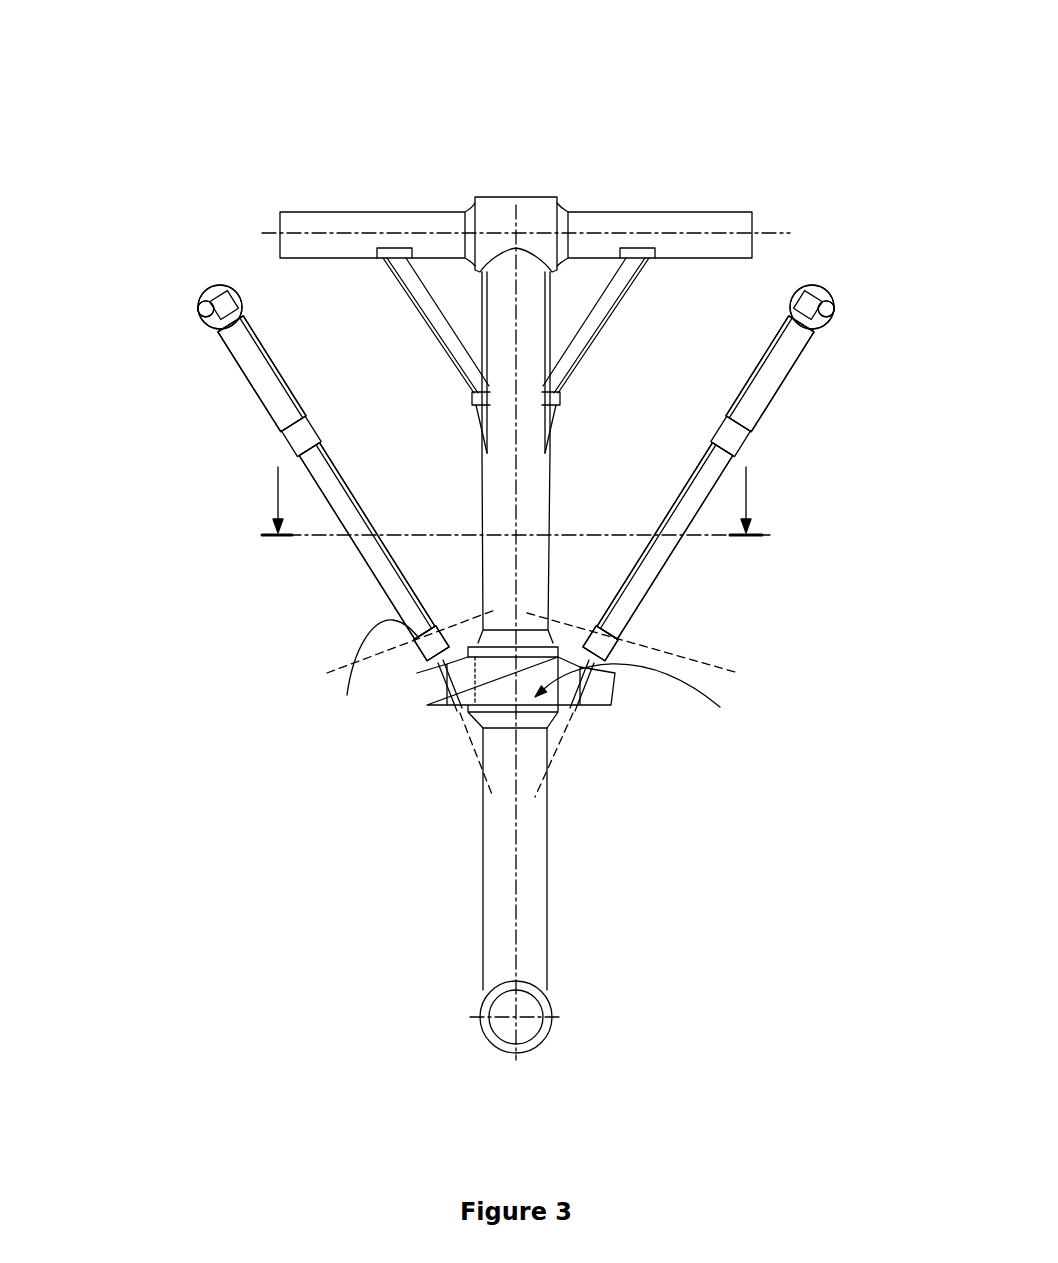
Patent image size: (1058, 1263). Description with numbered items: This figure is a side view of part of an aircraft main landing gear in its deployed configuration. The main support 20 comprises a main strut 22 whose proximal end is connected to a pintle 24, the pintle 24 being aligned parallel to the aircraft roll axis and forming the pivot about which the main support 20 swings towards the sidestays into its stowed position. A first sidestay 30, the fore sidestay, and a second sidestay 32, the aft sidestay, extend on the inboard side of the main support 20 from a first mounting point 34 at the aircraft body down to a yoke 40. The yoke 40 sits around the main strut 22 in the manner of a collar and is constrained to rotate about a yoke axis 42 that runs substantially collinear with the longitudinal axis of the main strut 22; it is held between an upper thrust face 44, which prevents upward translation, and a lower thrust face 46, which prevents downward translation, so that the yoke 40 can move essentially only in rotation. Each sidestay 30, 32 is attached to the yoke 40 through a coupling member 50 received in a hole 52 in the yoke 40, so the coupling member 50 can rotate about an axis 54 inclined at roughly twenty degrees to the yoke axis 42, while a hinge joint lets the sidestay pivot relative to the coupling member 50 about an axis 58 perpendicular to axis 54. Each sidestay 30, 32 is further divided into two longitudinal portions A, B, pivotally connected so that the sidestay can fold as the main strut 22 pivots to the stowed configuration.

The main support 20 is at (501, 548).
The main strut 22 is at (528, 935).
The pintle 24 is at (692, 222).
The first sidestay 30 is at (840, 359).
The second sidestay 32 is at (181, 363).
The first mounting point 34 is at (187, 281).
The yoke 40 is at (603, 697).
The yoke axis 42 is at (513, 343).
The upper thrust face 44 is at (538, 669).
The lower thrust face 46 is at (643, 700).
The coupling member 50 is at (422, 632).
The hole 52 is at (570, 642).
The axis 54 is at (472, 742).
The axis 58 is at (353, 665).
The longitudinal portion A is at (370, 550).
The longitudinal portion B is at (270, 395).